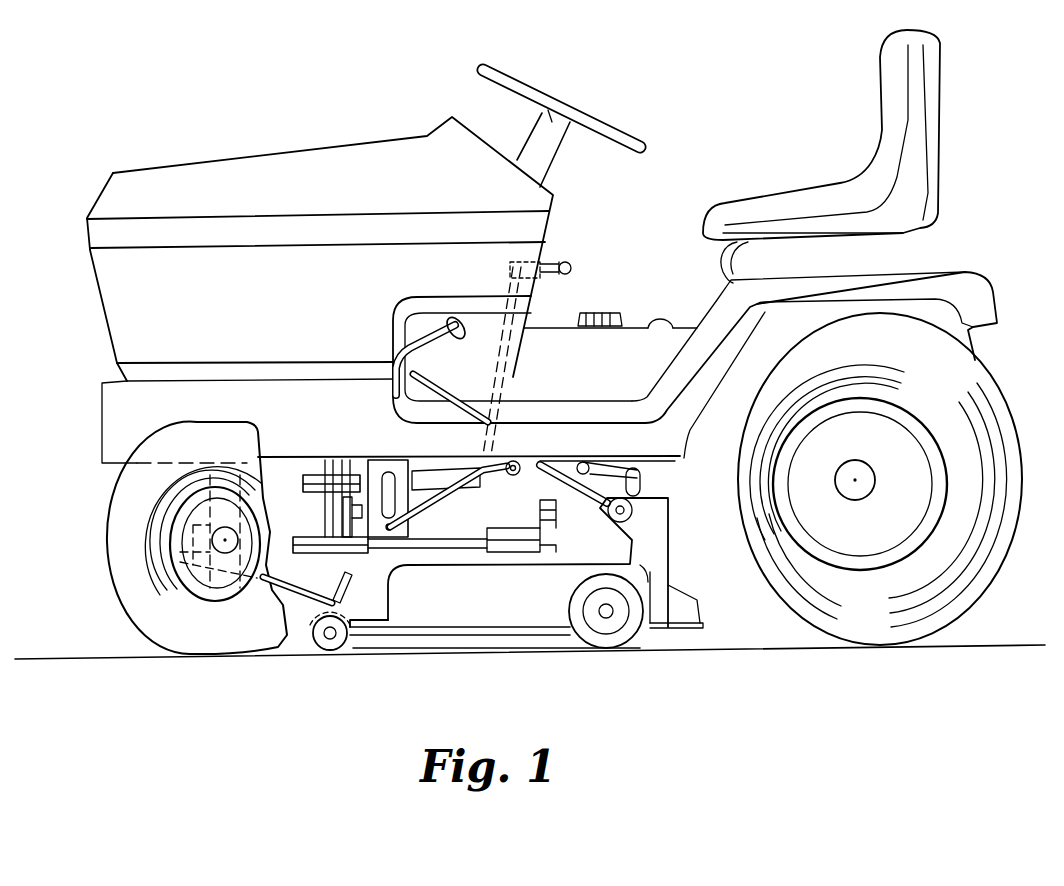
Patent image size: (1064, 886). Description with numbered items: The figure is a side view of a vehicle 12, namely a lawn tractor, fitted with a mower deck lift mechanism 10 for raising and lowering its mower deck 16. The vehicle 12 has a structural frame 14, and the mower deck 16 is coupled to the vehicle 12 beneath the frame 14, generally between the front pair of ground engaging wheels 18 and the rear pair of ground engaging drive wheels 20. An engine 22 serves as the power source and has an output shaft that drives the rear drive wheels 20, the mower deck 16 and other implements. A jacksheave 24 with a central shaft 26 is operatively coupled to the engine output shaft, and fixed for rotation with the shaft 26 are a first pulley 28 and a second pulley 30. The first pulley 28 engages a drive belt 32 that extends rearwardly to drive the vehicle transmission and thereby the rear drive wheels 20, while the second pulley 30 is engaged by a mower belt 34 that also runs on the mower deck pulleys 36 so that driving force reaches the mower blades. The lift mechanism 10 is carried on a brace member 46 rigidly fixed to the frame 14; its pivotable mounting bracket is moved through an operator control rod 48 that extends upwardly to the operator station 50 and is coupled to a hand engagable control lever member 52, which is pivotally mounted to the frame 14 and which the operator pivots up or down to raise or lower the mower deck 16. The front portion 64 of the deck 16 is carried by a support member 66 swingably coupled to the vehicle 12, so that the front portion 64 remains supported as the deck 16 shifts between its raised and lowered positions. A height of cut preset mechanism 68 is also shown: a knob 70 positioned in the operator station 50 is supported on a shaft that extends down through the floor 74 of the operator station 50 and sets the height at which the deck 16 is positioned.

The mower deck lift mechanism 10 is at (265, 400).
The vehicle 12 is at (222, 122).
The structural frame 14 is at (205, 382).
The mower deck 16 is at (525, 636).
The front pair of ground engaging wheels 18 is at (105, 532).
The rear pair of ground engaging drive wheels 20 is at (992, 585).
The engine 22 is at (150, 152).
The jacksheave 24 is at (338, 425).
The central shaft 26 is at (322, 512).
The first pulley 28 is at (312, 467).
The second pulley 30 is at (294, 615).
The drive belt 32 is at (686, 448).
The mower belt 34 is at (465, 550).
The mower deck pulleys 36 is at (560, 540).
The brace member 46 is at (400, 460).
The operator control rod 48 is at (500, 327).
The operator station 50 is at (678, 120).
The hand engagable control lever member 52 is at (568, 262).
The front portion of the deck 64 is at (357, 652).
The support member 66 is at (270, 613).
The height of cut preset mechanism 68 is at (612, 283).
The knob 70 is at (624, 312).
The floor 74 is at (657, 335).